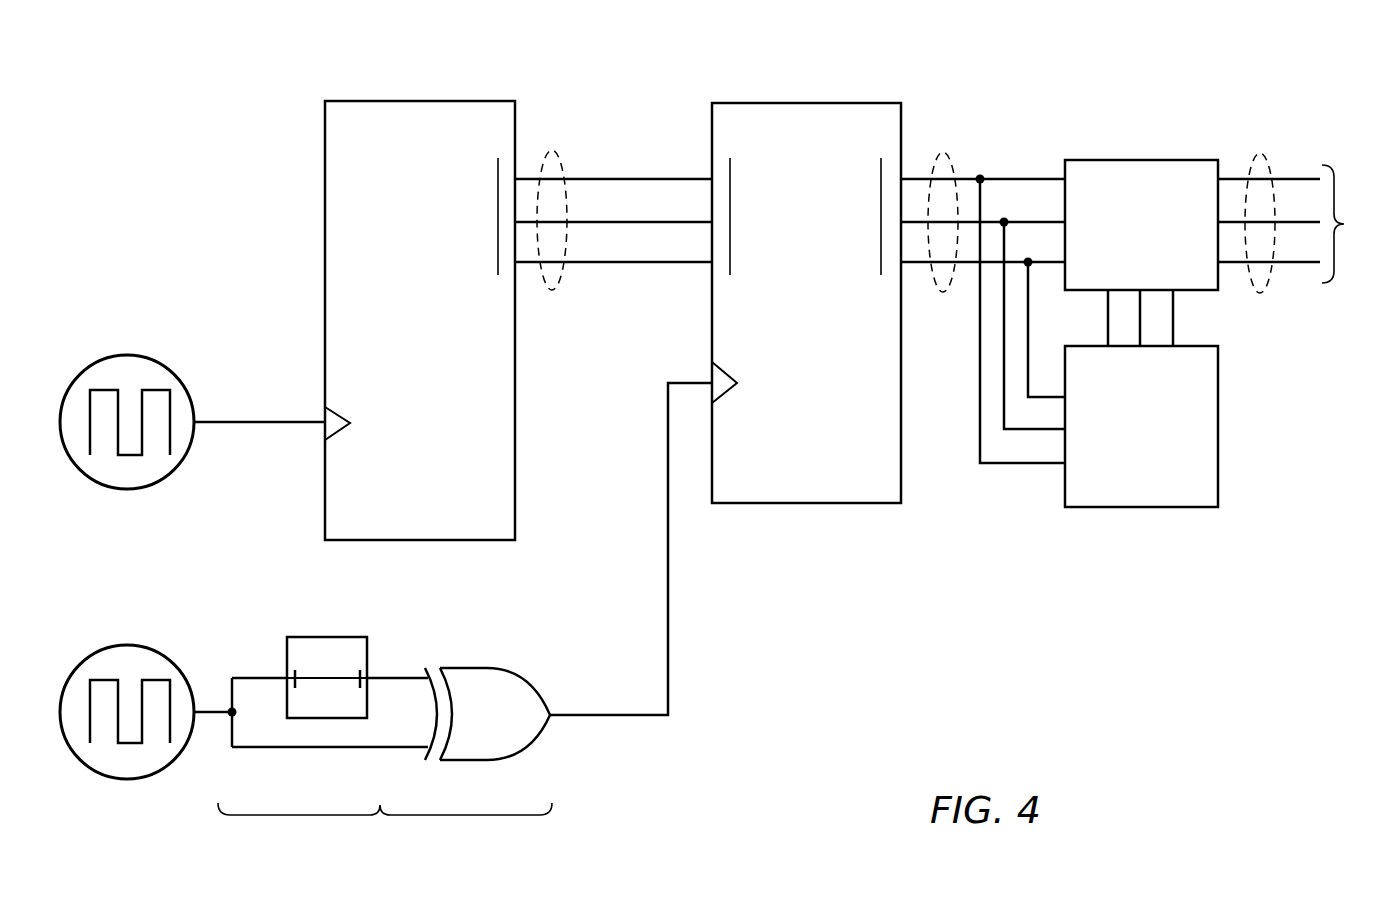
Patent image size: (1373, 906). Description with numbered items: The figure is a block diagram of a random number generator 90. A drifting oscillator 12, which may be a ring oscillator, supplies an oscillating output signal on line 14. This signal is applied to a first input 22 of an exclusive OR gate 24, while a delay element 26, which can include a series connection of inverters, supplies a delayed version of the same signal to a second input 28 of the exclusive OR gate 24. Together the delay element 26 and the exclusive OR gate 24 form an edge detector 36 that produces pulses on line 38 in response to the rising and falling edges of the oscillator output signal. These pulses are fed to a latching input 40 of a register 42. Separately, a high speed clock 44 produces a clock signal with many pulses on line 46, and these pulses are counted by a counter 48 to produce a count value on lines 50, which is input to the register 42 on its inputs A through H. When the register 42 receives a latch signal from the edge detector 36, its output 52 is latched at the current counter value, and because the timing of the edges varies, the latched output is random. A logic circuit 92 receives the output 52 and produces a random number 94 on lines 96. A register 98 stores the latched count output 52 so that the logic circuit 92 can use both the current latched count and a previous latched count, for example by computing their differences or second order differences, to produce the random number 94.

The drifting oscillator 12 is at (127, 779).
The line 14 is at (207, 716).
The first input 22 is at (380, 748).
The exclusive OR gate 24 is at (520, 748).
The delay element 26 is at (320, 637).
The second input 28 is at (395, 678).
The edge detector 36 is at (385, 828).
The line 38 is at (668, 612).
The latching input 40 is at (712, 375).
The register 42 is at (800, 503).
The high speed clock 44 is at (165, 480).
The line 46 is at (288, 425).
The counter 48 is at (325, 278).
The lines 50 is at (552, 150).
The output 52 is at (943, 150).
The random number generator 90 is at (969, 682).
The logic circuit 92 is at (1140, 160).
The random number 94 is at (1347, 224).
The lines 96 is at (1262, 152).
The register 98 is at (1140, 507).